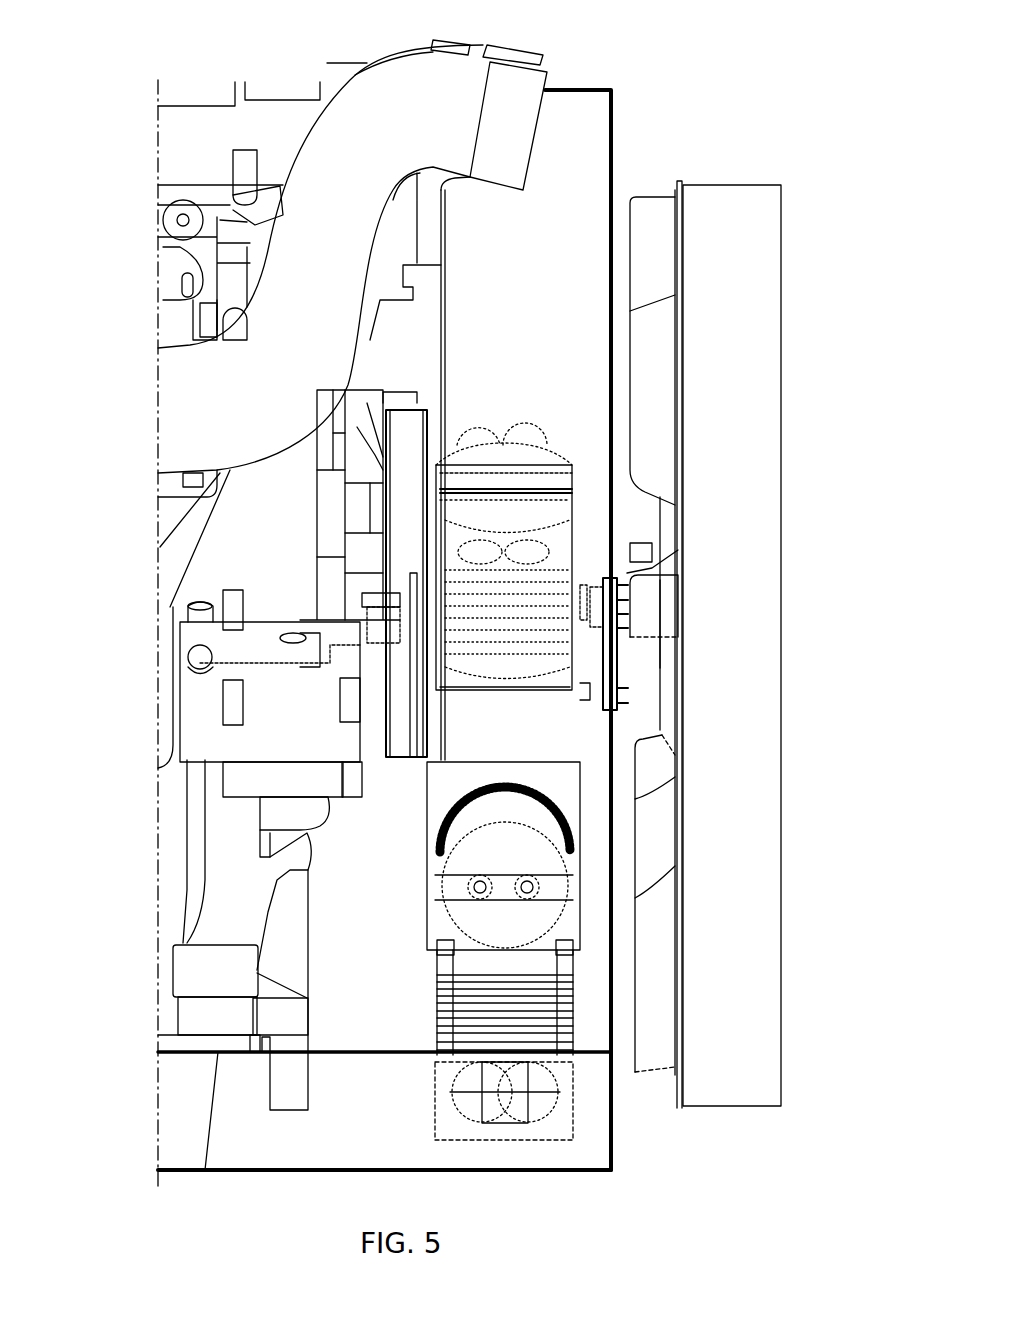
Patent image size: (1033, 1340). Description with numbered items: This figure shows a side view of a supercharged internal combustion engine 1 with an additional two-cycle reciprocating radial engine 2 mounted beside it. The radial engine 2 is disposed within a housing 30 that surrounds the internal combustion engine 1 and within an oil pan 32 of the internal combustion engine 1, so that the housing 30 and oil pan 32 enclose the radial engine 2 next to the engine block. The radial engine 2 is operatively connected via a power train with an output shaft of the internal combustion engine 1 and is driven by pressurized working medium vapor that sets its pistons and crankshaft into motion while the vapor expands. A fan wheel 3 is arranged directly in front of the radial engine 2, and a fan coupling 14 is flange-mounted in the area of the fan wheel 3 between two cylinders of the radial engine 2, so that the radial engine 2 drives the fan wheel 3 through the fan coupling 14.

The internal combustion engine 1 is at (177, 873).
The radial engine 2 is at (552, 733).
The fan wheel 3 is at (733, 345).
The fan coupling 14 is at (619, 670).
The housing 30 is at (613, 93).
The oil pan 32 is at (617, 1125).